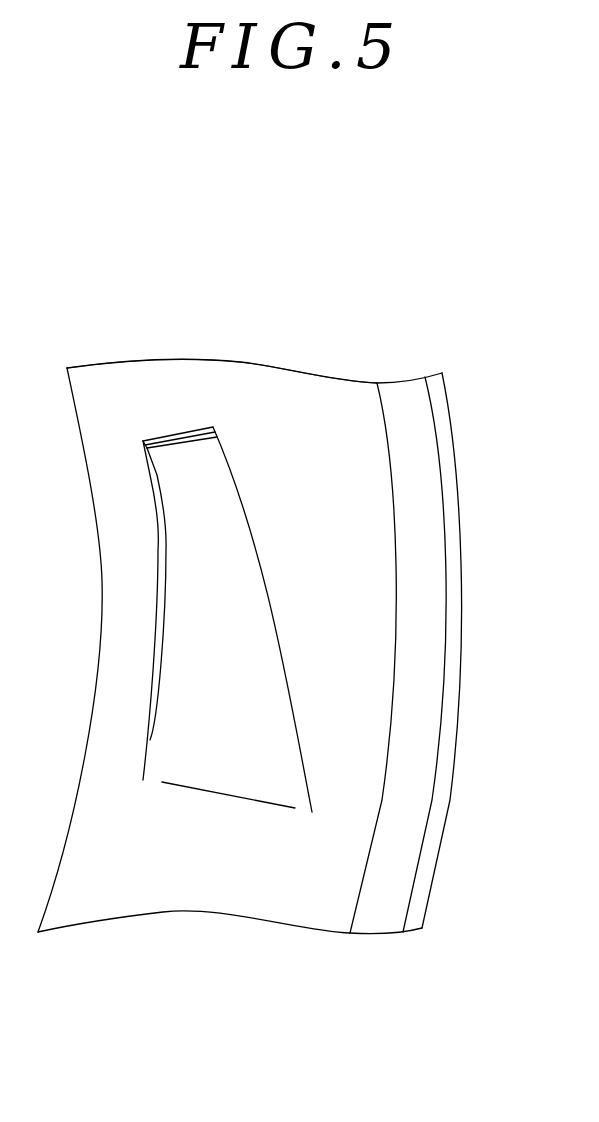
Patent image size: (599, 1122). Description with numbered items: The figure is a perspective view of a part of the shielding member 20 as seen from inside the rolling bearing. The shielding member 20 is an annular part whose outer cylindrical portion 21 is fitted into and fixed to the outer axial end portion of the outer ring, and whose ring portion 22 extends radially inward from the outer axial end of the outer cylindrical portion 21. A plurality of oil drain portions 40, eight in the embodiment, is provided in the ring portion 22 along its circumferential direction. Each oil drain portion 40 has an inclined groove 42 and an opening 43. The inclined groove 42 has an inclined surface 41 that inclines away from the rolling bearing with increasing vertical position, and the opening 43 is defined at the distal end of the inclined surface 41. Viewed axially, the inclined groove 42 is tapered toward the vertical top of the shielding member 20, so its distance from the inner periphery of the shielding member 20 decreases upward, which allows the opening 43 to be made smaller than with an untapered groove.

The shielding member 20 is at (287, 596).
The outer cylindrical portion 21 is at (417, 507).
The ring portion 22 is at (230, 383).
The oil drain portion 40 is at (339, 535).
The inclined surface 41 is at (237, 733).
The inclined groove 42 is at (282, 632).
The opening 43 is at (170, 447).